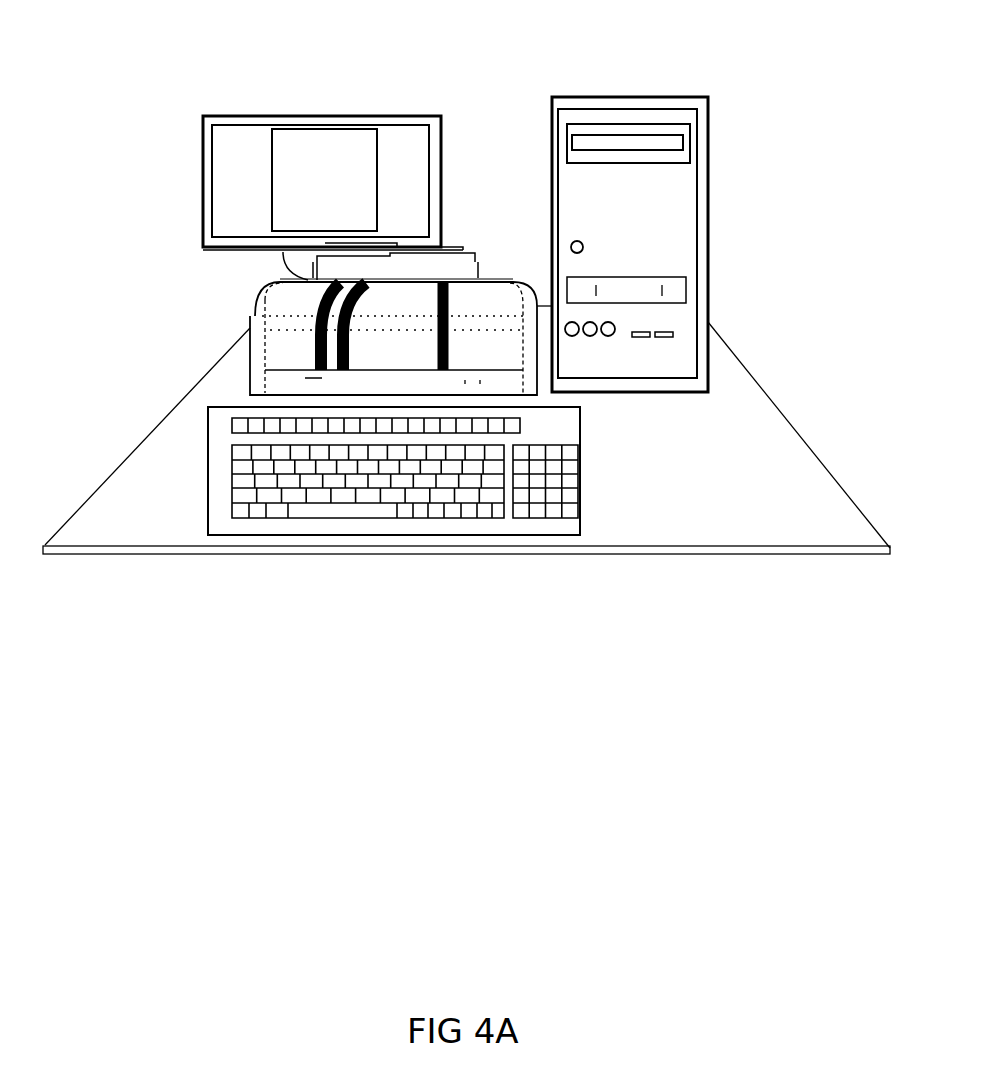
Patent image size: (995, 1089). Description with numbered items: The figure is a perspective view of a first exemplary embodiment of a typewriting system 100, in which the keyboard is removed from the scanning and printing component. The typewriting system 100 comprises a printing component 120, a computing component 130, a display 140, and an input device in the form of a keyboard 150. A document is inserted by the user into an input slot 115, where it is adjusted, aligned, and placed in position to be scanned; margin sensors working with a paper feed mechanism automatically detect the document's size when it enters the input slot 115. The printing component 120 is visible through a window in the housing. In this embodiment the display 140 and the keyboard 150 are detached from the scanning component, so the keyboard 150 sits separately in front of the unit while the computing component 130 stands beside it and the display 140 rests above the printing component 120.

The typewriting system 100 is at (495, 278).
The input slot 115 is at (452, 234).
The printing component 120 is at (253, 313).
The computing component 130 is at (720, 131).
The display 140 is at (305, 111).
The keyboard 150 is at (590, 473).